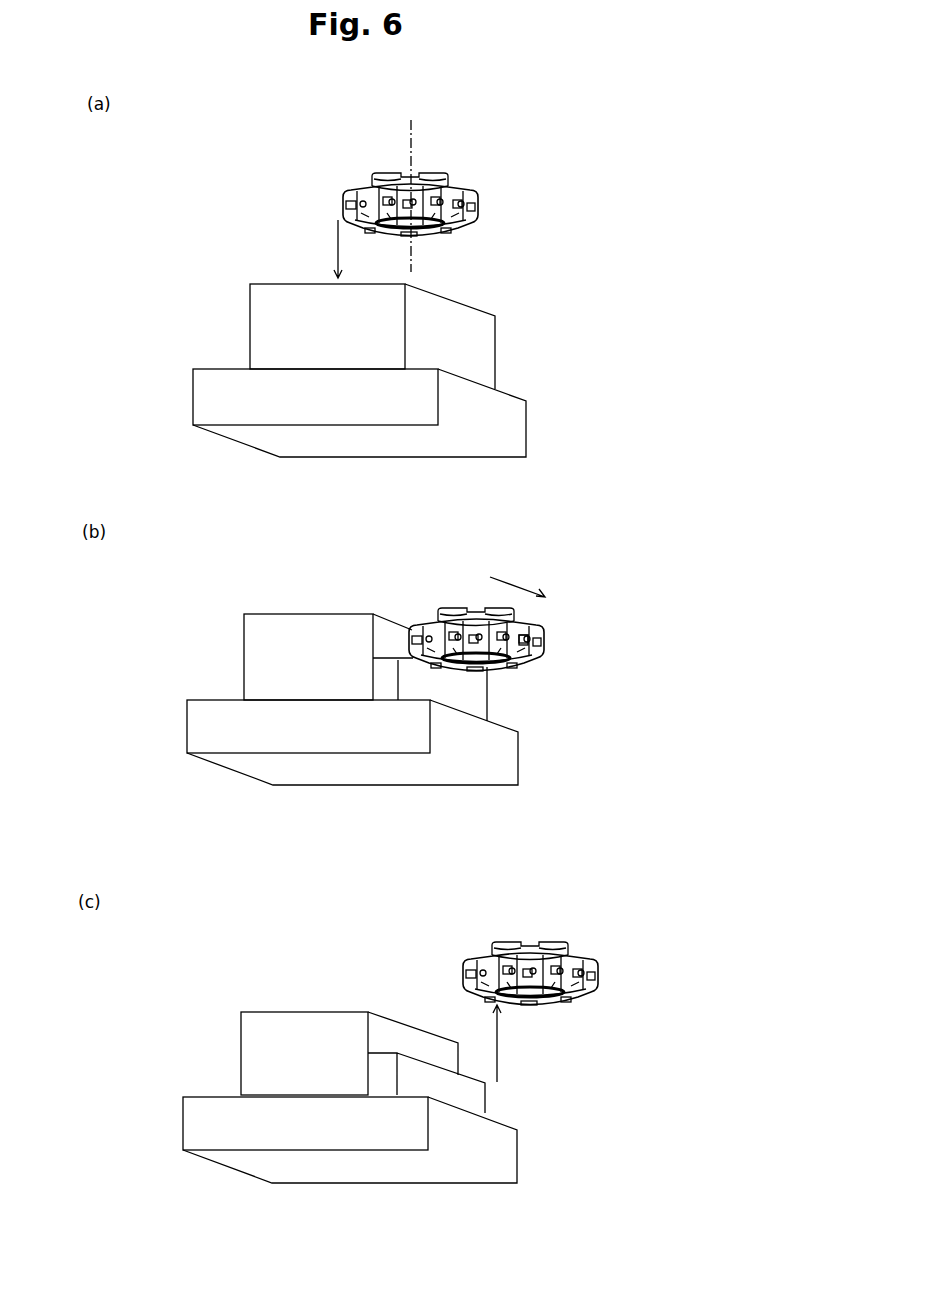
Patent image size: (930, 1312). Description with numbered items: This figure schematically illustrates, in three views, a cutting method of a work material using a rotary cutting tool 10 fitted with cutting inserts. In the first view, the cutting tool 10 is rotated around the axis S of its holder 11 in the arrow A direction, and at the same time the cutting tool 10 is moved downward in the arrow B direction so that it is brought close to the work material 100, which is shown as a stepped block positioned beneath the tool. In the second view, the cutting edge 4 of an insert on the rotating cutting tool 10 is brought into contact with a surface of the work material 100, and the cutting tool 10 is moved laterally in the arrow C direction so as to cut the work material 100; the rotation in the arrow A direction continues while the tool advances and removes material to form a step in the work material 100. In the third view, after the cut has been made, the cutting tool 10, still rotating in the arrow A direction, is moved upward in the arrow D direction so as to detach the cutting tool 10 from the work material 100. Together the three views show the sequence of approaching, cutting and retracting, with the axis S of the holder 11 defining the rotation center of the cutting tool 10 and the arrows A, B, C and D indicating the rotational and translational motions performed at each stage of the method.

The cutting tool 10 is at (477, 184).
The holder 11 is at (391, 173).
The cutting edge 4 is at (538, 660).
The work material 100 is at (227, 354).
The axis S is at (412, 132).
The arrow A direction A is at (337, 195).
The arrow B direction B is at (337, 253).
The arrow C direction C is at (517, 579).
The arrow D direction D is at (497, 1052).